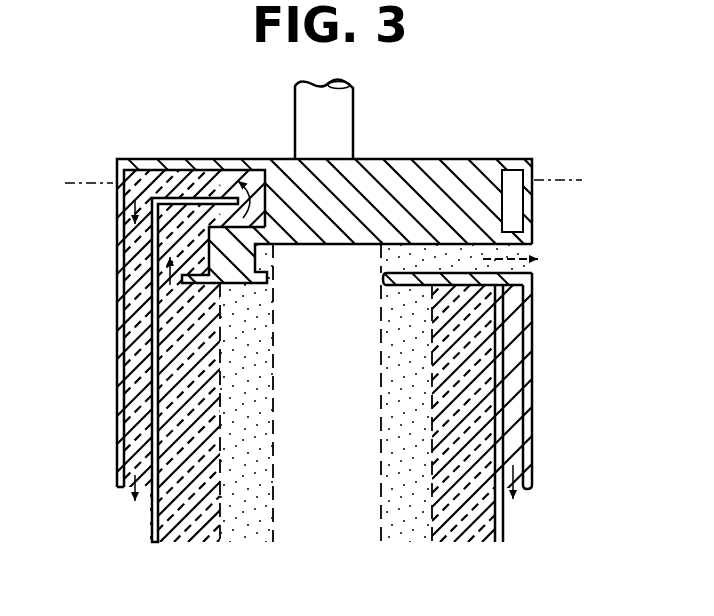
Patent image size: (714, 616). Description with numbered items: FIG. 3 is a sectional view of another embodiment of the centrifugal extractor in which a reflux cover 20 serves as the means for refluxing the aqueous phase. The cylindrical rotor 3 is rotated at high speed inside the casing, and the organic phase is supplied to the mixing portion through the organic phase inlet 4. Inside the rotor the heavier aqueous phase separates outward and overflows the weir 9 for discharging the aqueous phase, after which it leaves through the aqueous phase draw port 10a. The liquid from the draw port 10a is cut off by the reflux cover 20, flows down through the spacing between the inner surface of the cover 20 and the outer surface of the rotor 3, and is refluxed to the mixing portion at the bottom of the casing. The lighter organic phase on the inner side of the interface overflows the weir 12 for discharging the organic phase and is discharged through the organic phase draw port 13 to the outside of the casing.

The rotor 3 is at (502, 518).
The organic phase inlet 4 is at (324, 182).
The weir for discharging the aqueous phase 9 is at (208, 197).
The aqueous phase draw port 10a is at (167, 183).
The weir for discharging the organic phase 12 is at (400, 280).
The organic phase draw port 13 is at (513, 258).
The reflux cover 20 is at (118, 359).